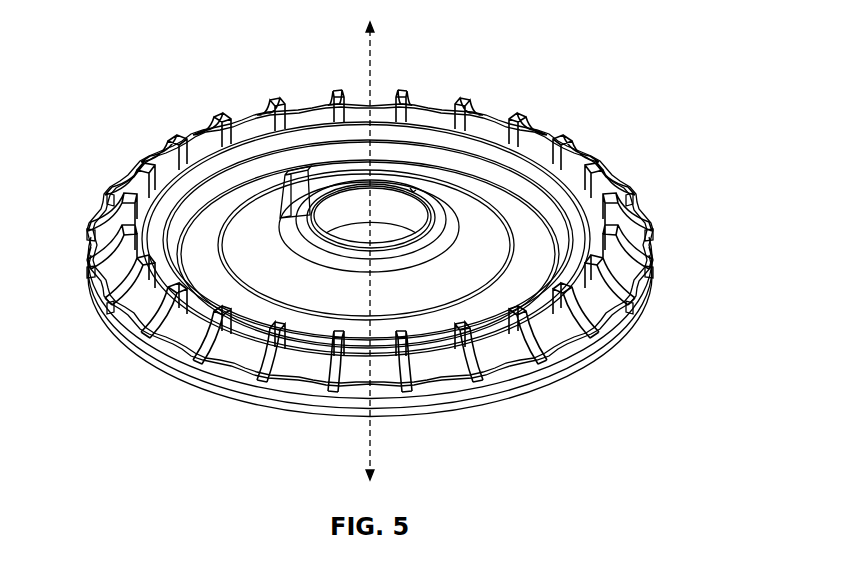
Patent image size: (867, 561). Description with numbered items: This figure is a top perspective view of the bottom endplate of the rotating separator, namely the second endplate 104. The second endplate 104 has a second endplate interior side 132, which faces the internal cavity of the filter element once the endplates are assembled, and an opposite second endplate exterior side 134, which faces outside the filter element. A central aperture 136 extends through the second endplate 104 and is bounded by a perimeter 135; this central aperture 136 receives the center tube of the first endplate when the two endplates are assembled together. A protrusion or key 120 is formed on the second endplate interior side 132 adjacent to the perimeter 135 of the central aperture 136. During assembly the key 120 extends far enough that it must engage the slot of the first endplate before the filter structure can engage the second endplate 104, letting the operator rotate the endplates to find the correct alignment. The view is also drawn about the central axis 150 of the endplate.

The second endplate 104 is at (620, 175).
The key 120 is at (267, 122).
The second endplate interior side 132 is at (540, 102).
The second endplate exterior side 134 is at (566, 394).
The perimeter 135 is at (328, 173).
The central aperture 136 is at (410, 188).
The central axis 150 is at (370, 57).